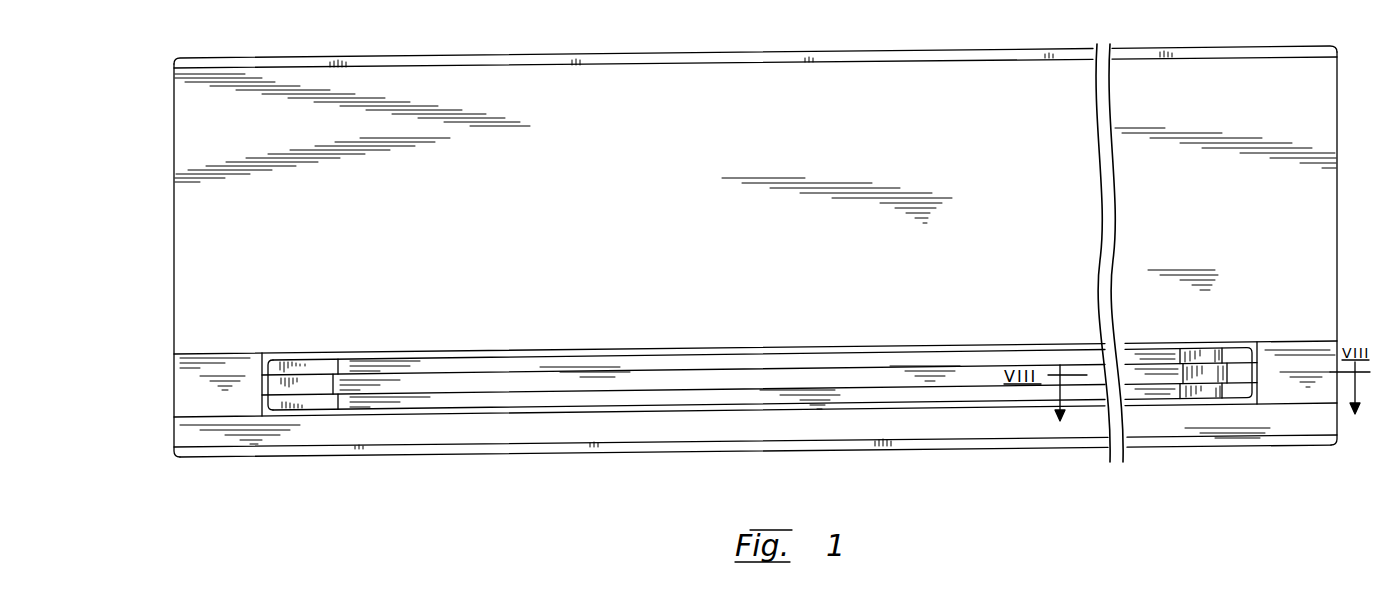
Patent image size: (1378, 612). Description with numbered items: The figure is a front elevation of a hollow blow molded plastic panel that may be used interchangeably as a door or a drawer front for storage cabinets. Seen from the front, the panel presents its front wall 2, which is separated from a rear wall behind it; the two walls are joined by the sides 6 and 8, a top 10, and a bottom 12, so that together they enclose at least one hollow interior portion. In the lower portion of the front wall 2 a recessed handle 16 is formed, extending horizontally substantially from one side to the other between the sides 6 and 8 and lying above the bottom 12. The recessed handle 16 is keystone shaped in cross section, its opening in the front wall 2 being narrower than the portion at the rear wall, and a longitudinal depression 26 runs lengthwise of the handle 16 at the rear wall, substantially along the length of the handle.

The front wall 2 is at (708, 168).
The side 6 is at (175, 277).
The side 8 is at (1338, 272).
The top 10 is at (826, 52).
The bottom 12 is at (884, 447).
The recessed handle 16 is at (763, 343).
The longitudinal depression 26 is at (808, 378).